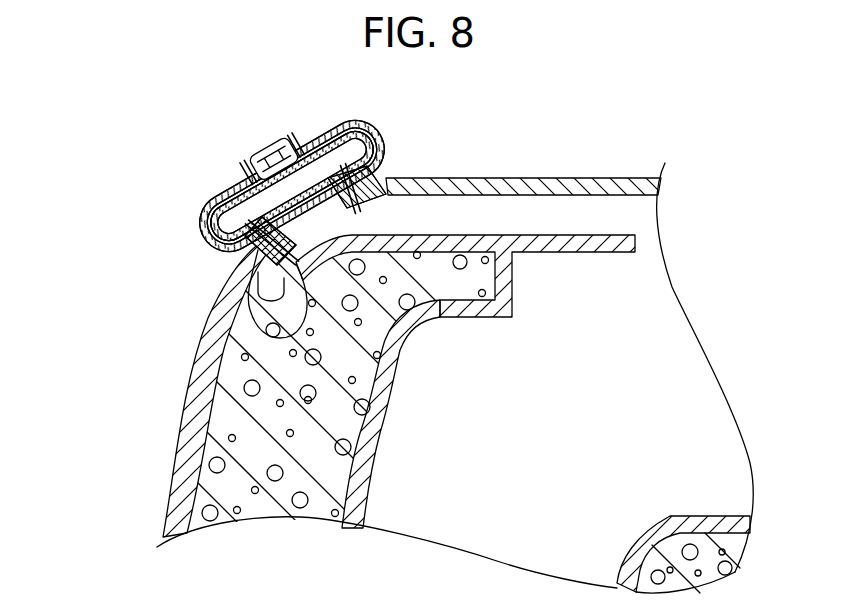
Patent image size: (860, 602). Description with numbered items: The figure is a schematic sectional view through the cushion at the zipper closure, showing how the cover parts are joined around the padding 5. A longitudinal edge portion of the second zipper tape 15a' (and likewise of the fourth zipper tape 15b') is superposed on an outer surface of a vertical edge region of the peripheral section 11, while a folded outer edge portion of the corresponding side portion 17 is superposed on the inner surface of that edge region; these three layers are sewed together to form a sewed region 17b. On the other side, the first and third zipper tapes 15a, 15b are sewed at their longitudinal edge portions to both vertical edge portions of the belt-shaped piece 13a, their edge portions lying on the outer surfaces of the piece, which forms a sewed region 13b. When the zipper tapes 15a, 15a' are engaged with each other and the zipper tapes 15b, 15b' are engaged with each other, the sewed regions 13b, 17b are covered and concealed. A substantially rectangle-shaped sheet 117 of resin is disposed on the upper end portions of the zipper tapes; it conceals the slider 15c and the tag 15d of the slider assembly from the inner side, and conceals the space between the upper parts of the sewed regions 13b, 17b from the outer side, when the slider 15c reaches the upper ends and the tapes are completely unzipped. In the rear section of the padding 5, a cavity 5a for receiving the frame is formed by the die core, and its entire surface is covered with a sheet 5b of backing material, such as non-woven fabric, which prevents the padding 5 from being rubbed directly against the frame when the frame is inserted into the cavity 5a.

The padding 5 is at (287, 494).
The cavity 5a is at (365, 445).
The sheet of backing material 5b is at (708, 517).
The peripheral section 11 is at (196, 382).
The belt-shaped piece 13a is at (535, 178).
The sewed region 13b is at (390, 172).
The first zipper tape 15a is at (369, 174).
The third zipper tape 15b is at (292, 186).
The second zipper tape 15a' is at (199, 186).
The fourth zipper tape 15b' is at (292, 186).
The slider 15c is at (253, 142).
The tag 15d is at (290, 132).
The side portion 17 is at (558, 252).
The sewed region 17b is at (275, 339).
The sheet of resin 117 is at (222, 236).